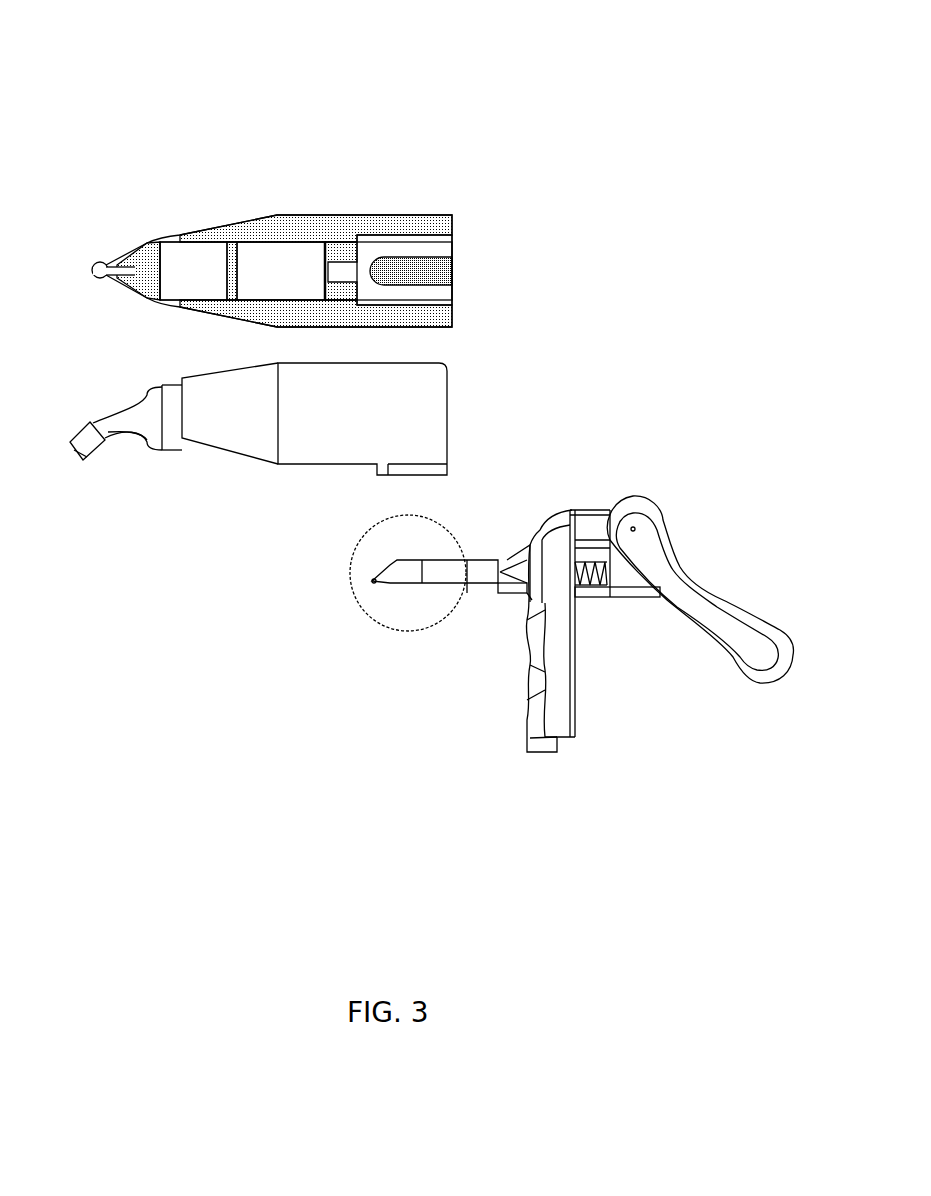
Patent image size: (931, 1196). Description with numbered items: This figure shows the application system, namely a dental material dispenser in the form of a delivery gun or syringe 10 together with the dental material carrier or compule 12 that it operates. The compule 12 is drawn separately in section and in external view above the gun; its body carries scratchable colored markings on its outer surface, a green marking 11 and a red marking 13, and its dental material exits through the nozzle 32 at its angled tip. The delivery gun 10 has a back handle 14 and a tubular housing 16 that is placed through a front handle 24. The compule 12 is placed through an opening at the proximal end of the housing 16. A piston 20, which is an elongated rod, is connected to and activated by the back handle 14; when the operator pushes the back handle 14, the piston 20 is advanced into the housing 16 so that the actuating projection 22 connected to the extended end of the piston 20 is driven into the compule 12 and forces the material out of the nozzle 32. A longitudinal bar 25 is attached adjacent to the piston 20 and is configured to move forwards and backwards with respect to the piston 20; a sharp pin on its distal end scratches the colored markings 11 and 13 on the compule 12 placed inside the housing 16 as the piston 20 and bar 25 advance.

The delivery gun 10 is at (684, 450).
The green colored marking 11 is at (263, 242).
The compule 12 is at (440, 120).
The red colored marking 13 is at (182, 237).
The back handle 14 is at (733, 595).
The tubular housing 16 is at (480, 560).
The piston 20 is at (625, 575).
The actuating projection 22 is at (407, 250).
The front handle 24 is at (528, 672).
The longitudinal bar 25 is at (597, 597).
The nozzle 32 is at (93, 459).